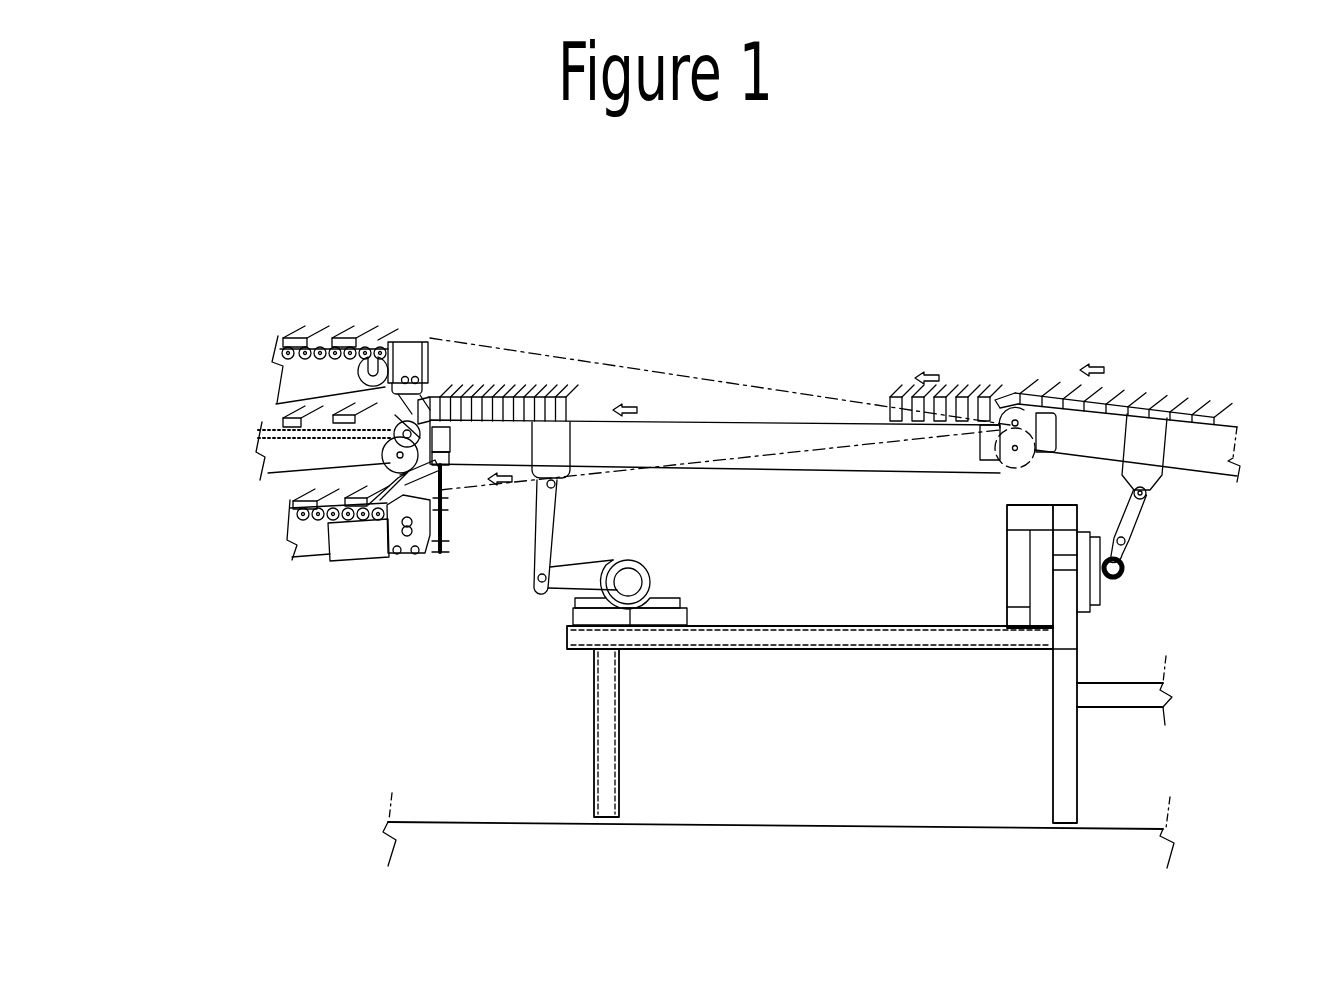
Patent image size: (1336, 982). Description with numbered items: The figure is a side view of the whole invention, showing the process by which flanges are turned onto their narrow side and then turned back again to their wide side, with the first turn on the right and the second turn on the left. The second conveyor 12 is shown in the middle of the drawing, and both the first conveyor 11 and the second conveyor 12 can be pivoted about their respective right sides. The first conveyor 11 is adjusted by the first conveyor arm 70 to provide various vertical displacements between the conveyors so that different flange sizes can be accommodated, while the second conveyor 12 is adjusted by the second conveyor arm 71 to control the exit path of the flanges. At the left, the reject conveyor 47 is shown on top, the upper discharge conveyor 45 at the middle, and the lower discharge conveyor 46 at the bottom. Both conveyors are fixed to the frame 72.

The first conveyor 11 is at (1210, 425).
The second conveyor 12 is at (812, 423).
The upper discharge conveyor 45 is at (262, 452).
The lower discharge conveyor 46 is at (288, 513).
The reject conveyor 47 is at (378, 343).
The first conveyor arm 70 is at (535, 554).
The second conveyor arm 71 is at (1140, 522).
The frame 72 is at (825, 640).